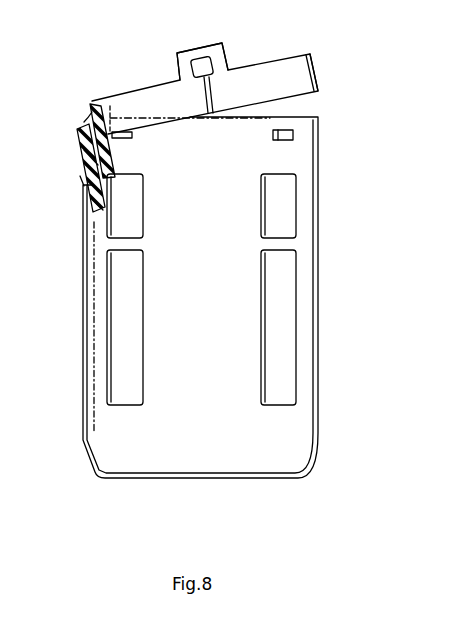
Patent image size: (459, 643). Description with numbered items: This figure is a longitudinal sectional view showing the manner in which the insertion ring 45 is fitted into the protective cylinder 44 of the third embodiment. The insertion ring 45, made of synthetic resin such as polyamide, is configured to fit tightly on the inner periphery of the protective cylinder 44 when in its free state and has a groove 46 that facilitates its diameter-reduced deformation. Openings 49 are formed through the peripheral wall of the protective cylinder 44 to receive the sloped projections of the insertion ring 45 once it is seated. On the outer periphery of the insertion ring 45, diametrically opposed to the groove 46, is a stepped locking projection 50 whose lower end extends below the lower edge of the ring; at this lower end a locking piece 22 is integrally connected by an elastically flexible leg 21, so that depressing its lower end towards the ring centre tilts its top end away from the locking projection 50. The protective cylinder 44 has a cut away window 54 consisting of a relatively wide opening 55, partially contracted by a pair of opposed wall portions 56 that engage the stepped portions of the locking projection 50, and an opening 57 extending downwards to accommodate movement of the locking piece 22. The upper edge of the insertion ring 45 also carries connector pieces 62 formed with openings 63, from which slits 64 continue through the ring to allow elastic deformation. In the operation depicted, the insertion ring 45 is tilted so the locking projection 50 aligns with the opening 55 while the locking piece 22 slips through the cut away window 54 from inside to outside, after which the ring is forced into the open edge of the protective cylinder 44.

The elastically flexible leg 21 is at (118, 176).
The locking piece 22 is at (83, 140).
The protective cylinder 44 is at (319, 277).
The insertion ring 45 is at (276, 55).
The groove 46 is at (319, 72).
The openings 49 is at (127, 140).
The locking projection 50 is at (112, 150).
The cut away window 54 is at (78, 181).
The opening 55 is at (93, 160).
The opposed wall portions 56 is at (92, 121).
The opening 57 is at (92, 207).
The connector pieces 62 is at (198, 54).
The openings 63 is at (211, 68).
The slits 64 is at (216, 120).